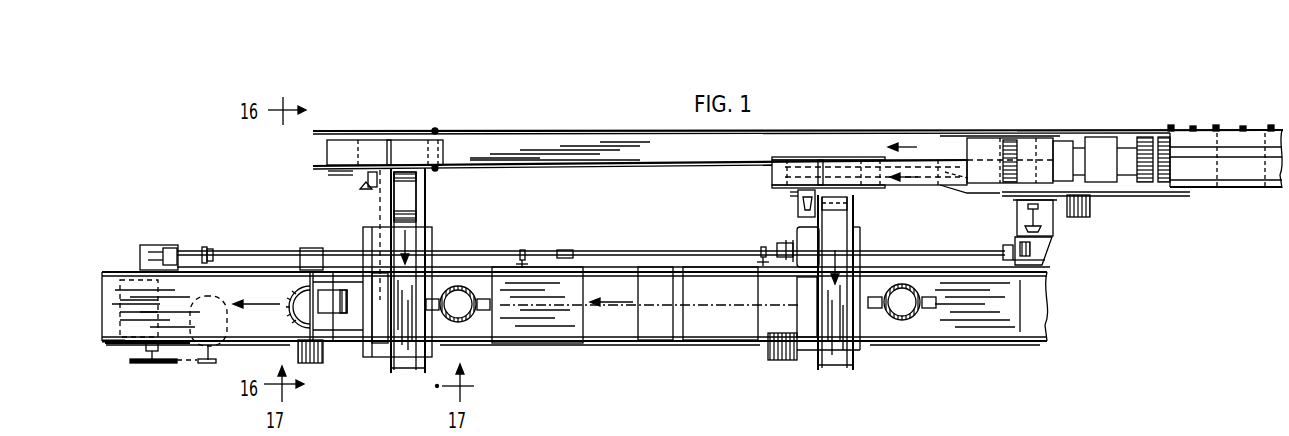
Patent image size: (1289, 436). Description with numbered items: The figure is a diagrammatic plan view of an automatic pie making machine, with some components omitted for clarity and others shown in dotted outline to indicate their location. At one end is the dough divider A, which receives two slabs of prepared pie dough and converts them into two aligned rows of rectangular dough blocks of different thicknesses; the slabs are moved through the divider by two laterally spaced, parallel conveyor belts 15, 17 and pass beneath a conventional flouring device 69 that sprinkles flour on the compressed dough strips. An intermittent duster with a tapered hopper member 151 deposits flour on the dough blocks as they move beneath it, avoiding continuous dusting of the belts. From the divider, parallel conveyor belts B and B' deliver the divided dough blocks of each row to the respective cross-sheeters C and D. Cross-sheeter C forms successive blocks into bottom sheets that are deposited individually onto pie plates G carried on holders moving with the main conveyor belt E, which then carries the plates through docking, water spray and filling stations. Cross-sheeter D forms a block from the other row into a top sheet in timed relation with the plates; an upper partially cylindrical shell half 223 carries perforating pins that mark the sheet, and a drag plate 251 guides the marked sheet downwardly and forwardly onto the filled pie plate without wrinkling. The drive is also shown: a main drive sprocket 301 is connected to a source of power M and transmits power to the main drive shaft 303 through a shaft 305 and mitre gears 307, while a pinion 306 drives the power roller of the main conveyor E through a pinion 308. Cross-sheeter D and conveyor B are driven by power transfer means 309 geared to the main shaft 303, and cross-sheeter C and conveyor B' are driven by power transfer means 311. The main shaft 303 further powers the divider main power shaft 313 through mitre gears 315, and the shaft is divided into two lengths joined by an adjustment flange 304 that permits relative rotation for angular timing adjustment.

The dough divider A is at (1200, 120).
The conveyor belt B is at (798, 122).
The conveyor belt B' is at (886, 137).
The cross-sheeter C is at (860, 233).
The cross-sheeter D is at (432, 233).
The main conveyor belt E is at (606, 354).
The pie plate G is at (472, 330).
The source of power M is at (214, 343).
The conveyor belt 15 is at (1258, 173).
The conveyor belt 17 is at (1235, 147).
The flouring device 69 is at (1104, 142).
The hopper member 151 is at (976, 141).
The upper partially cylindrical shell half 223 is at (345, 316).
The drag plate 251 is at (308, 335).
The main drive sprocket 301 is at (152, 363).
The main drive shaft 303 is at (258, 250).
The adjustment flange 304 is at (207, 247).
The shaft 305 is at (128, 275).
The pinion 306 is at (175, 345).
The mitre gears 307 is at (148, 245).
The pinion 308 is at (115, 345).
The power transfer means 309 is at (380, 200).
The power transfer means 311 is at (800, 213).
The divider main power shaft 313 is at (1020, 223).
The mitre gears 315 is at (1040, 254).